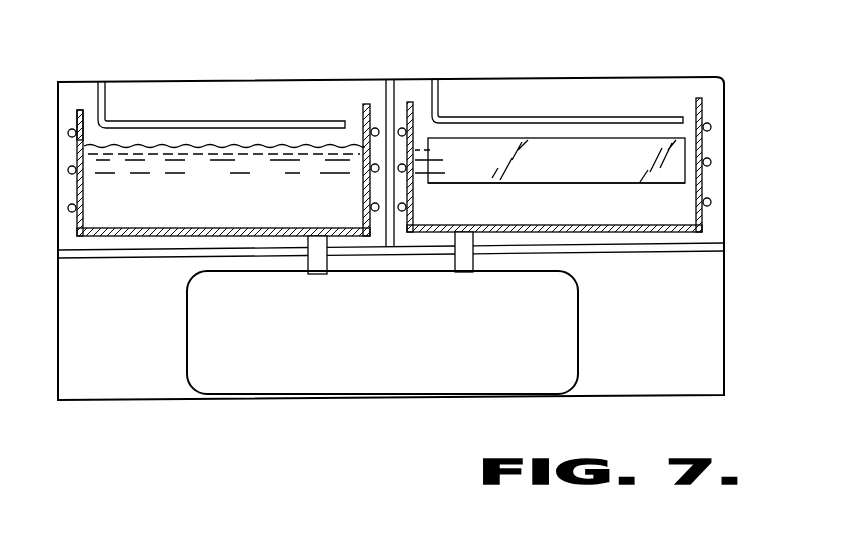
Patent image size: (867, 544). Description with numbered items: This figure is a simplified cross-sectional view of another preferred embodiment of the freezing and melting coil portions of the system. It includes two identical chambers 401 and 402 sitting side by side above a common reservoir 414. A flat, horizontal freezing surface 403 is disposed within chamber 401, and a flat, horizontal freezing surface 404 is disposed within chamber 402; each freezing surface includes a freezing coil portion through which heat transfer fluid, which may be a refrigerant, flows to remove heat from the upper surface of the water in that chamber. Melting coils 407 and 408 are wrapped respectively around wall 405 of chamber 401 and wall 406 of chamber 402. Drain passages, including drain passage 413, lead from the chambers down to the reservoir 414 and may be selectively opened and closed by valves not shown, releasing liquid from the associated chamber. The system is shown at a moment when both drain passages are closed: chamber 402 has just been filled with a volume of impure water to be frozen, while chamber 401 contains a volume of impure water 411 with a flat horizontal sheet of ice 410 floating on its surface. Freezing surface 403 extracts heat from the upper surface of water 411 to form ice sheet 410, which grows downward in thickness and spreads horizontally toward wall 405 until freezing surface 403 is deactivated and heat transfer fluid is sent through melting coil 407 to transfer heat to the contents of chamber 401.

The chamber 401 is at (581, 83).
The chamber 402 is at (146, 85).
The freezing surface 403 is at (498, 105).
The freezing surface 404 is at (200, 120).
The wall 405 is at (700, 100).
The wall 406 is at (78, 108).
The melting coil 407 is at (405, 110).
The melting coil 408 is at (68, 208).
The ice sheet 410 is at (572, 177).
The impure water 411 is at (595, 221).
The drain passage 413 is at (312, 265).
The reservoir 414 is at (308, 388).